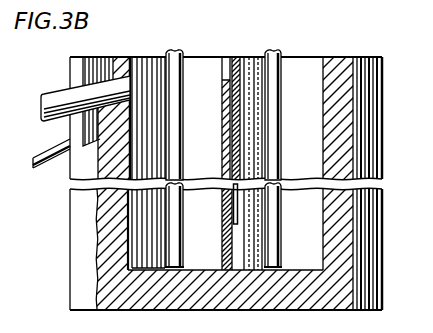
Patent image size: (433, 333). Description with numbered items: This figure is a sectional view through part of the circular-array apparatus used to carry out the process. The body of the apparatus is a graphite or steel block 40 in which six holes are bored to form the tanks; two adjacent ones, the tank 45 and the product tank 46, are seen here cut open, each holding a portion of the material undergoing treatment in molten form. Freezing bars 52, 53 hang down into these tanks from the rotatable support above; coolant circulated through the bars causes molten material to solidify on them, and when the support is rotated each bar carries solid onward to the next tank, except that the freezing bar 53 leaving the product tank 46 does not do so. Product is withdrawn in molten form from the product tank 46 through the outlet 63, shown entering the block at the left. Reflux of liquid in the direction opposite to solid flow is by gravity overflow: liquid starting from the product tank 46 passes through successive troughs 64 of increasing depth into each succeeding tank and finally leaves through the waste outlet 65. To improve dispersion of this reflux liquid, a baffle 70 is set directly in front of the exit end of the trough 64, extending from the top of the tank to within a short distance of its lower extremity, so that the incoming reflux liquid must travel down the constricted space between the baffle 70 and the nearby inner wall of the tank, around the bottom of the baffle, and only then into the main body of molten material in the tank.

The block 40 is at (373, 76).
The tank 45 is at (310, 70).
The product tank 46 is at (143, 68).
The freezing bar 52 is at (282, 54).
The freezing bar 53 is at (183, 53).
The outlet 63 is at (43, 110).
The trough 64 is at (207, 118).
The waste outlet 65 is at (33, 162).
The baffle 70 is at (243, 58).